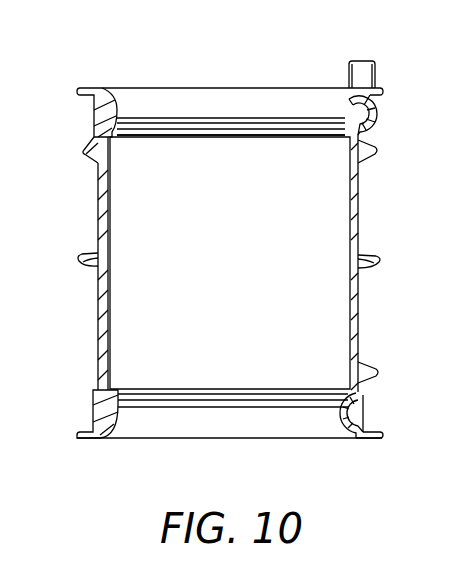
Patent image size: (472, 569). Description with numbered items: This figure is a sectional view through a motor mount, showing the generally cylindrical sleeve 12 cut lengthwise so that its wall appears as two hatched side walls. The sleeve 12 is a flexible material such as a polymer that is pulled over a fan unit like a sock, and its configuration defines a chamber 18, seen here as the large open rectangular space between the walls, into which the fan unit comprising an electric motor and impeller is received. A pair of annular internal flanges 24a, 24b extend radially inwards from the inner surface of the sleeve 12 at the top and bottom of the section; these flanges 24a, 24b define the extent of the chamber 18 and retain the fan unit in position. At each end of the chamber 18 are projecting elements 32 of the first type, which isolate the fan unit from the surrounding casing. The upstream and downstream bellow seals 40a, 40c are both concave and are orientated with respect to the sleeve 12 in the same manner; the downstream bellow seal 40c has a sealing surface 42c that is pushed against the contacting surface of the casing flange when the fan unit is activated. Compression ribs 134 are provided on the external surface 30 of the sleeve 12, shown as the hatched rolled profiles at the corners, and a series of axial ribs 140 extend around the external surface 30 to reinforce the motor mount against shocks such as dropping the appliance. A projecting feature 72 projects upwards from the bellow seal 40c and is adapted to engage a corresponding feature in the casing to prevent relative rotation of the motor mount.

The sleeve 12 is at (10, 505).
The chamber 18 is at (153, 169).
The flange 24a is at (301, 388).
The flange 24b is at (301, 138).
The external surface 30 is at (362, 318).
The projecting element 32 is at (382, 370).
The upstream bellow seal 40a is at (230, 440).
The downstream bellow seal 40c is at (232, 100).
The sealing surface 42c is at (86, 87).
The projecting feature 72 is at (366, 60).
The compression rib 134 is at (367, 117).
The axial rib 140 is at (98, 318).